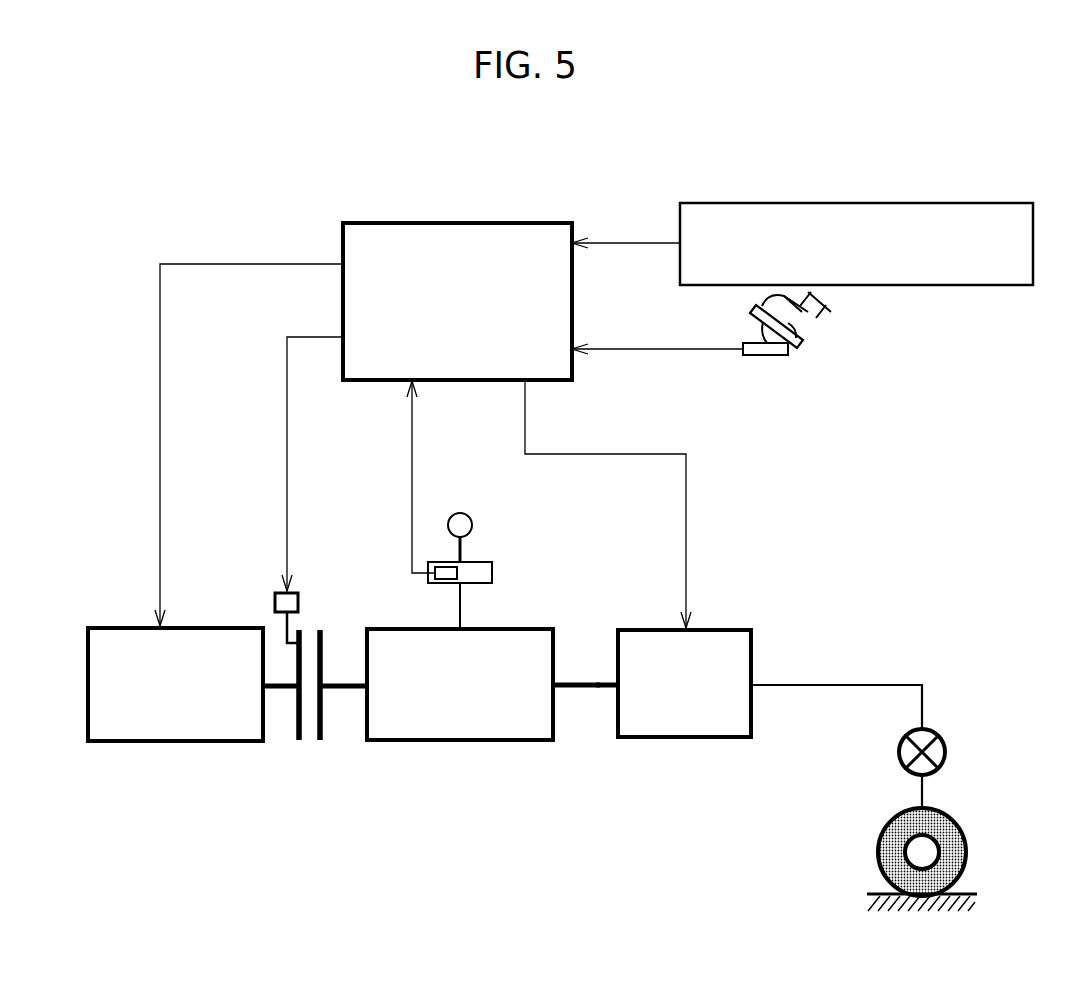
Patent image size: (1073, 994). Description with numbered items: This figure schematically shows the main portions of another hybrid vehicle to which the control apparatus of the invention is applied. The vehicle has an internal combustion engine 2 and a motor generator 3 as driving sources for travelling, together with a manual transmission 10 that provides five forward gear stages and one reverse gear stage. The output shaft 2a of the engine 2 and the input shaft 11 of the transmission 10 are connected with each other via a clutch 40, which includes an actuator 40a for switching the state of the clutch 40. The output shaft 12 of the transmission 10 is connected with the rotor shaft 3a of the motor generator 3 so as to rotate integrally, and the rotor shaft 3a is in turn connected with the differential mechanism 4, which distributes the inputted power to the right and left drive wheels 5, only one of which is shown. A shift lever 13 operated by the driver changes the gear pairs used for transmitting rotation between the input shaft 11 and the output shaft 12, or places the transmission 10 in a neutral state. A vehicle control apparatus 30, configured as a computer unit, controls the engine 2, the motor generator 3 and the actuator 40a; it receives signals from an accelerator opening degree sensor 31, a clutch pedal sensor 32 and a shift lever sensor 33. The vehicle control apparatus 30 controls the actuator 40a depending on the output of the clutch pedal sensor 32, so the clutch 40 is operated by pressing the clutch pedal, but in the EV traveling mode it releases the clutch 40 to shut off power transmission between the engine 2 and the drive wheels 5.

The engine 2 is at (130, 742).
The output shaft 2a is at (285, 690).
The motor generator 3 is at (675, 738).
The rotor shaft 3a is at (600, 690).
The differential mechanism 4 is at (900, 765).
The drive wheels 5 is at (878, 855).
The manual transmission 10 is at (465, 742).
The input shaft 11 is at (345, 690).
The output shaft 12 is at (575, 683).
The shift lever 13 is at (465, 543).
The vehicle control apparatus 30 is at (460, 222).
The accelerator opening degree sensor 31 is at (985, 286).
The clutch pedal sensor 32 is at (752, 310).
The shift lever sensor 33 is at (440, 566).
The clutch 40 is at (308, 746).
The actuator 40a is at (276, 598).